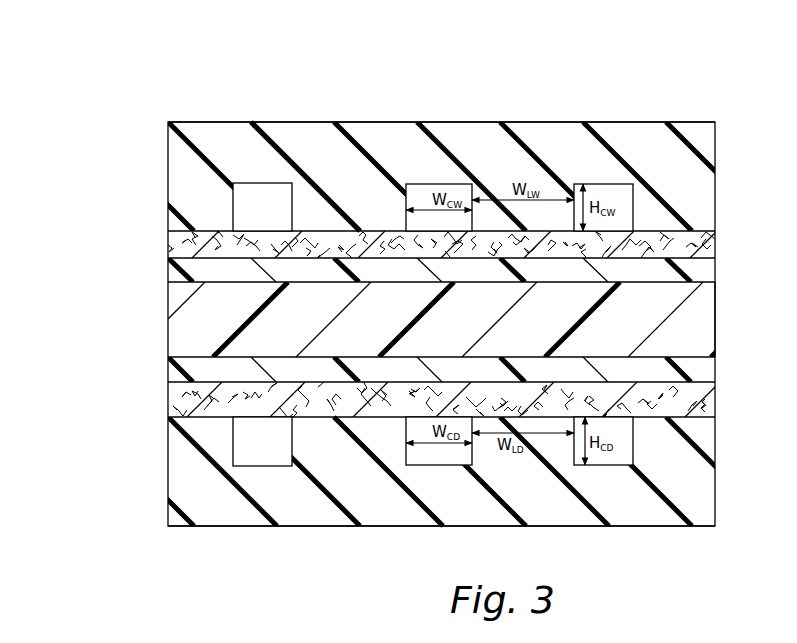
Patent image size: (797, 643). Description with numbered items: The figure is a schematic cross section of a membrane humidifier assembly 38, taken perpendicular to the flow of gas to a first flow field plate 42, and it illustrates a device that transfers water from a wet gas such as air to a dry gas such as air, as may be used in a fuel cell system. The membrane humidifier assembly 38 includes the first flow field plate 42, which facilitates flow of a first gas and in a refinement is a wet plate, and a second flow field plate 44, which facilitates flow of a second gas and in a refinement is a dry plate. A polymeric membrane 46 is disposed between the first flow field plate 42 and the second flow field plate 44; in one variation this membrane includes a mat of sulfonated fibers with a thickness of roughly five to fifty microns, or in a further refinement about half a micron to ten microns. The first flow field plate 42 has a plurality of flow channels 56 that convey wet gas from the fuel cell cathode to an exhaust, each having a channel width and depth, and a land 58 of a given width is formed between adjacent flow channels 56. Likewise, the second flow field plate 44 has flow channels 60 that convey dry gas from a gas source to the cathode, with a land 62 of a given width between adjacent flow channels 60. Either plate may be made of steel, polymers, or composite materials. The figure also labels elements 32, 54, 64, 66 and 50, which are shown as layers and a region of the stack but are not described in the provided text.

The membrane humidifier assembly 38 is at (252, 73).
The first flow field plate 42 is at (520, 122).
The second flow field plate 44 is at (362, 527).
The polymeric membrane 46 is at (158, 316).
The core edge 50 is at (703, 318).
The upper conductive layer 32 is at (173, 274).
The lower conductive layer 54 is at (172, 367).
The flow channels 56 is at (245, 195).
The land 58 is at (357, 231).
The flow channels 60 is at (242, 460).
The land 62 is at (335, 417).
The upper adhesive layer 64 is at (178, 240).
The lower adhesive layer 66 is at (172, 392).